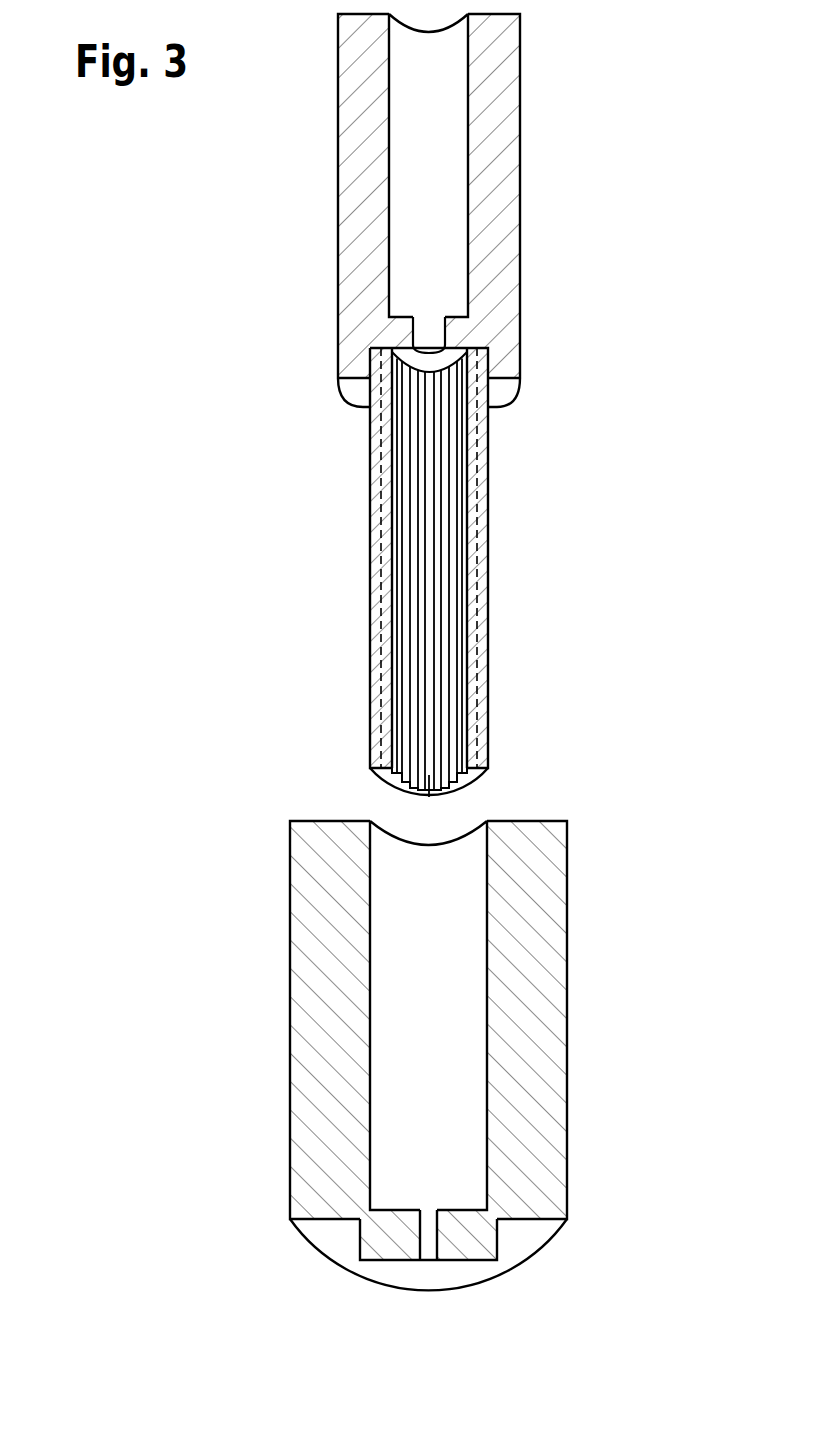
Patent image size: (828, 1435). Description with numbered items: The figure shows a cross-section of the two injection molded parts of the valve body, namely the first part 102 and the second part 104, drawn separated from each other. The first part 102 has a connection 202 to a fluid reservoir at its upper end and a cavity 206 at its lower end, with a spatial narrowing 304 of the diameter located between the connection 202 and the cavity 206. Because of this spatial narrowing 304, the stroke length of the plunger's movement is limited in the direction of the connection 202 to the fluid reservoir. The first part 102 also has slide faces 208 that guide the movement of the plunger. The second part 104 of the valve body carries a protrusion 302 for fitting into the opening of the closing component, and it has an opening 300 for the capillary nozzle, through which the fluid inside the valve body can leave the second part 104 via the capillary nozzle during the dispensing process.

The first part 102 is at (520, 116).
The connection 202 is at (413, 236).
The spatial narrowing 304 is at (447, 337).
The slide faces 208 is at (398, 690).
The cavity 206 is at (428, 797).
The second part 104 is at (580, 920).
The protrusion 302 is at (378, 1253).
The opening 300 is at (430, 1258).